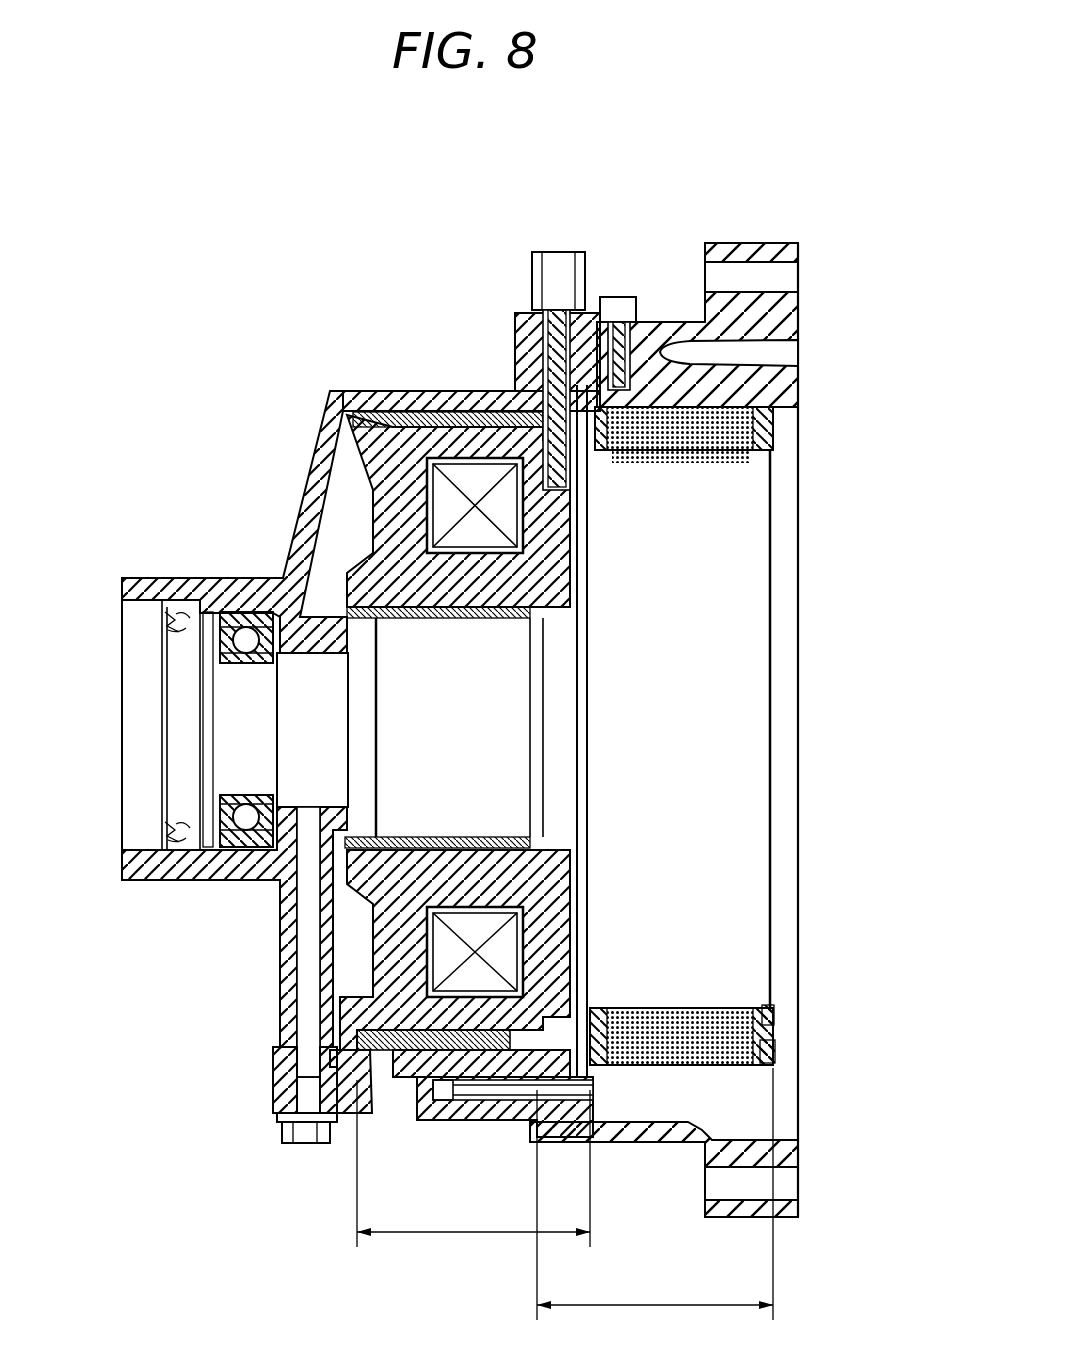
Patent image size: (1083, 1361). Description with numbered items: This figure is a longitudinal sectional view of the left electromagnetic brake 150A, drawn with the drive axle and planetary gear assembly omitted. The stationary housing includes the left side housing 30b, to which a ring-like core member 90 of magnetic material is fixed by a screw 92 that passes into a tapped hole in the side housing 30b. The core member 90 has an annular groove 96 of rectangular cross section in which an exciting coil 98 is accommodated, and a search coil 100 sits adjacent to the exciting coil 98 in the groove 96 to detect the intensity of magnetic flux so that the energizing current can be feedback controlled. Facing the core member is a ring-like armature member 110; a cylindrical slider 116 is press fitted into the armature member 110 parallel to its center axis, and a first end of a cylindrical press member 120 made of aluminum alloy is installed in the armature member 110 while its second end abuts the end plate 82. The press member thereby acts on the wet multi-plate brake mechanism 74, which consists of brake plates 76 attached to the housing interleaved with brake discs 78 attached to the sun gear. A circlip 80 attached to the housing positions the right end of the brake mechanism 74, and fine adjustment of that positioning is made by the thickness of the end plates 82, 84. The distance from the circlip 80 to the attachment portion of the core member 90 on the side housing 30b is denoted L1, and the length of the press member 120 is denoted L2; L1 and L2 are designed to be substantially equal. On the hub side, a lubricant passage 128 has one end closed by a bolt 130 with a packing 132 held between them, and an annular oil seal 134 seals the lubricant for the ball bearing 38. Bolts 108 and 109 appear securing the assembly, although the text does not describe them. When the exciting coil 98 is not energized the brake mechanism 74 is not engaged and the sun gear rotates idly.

The left electromagnetic brake 150A is at (250, 520).
The left side housing 30b is at (386, 391).
The ball bearing 38 is at (246, 648).
The wet multi-plate brake mechanism 74 is at (680, 1090).
The brake plates 76 is at (772, 428).
The brake discs 78 is at (668, 452).
The circlip 80 is at (776, 1046).
The end plate 82 is at (592, 1080).
The end plate 84 is at (774, 1012).
The ring-like core member 90 is at (482, 1098).
The screw 92 is at (598, 1100).
The annular groove 96 is at (505, 985).
The exciting coil 98 is at (468, 477).
The search coil 100 is at (560, 947).
The bolt 108 is at (558, 250).
The bolt 109 is at (617, 298).
The armature member 110 is at (370, 918).
The cylindrical slider 116 is at (443, 620).
The cylindrical press member 120 is at (397, 1075).
The lubricant passage 128 is at (305, 970).
The bolt 130 is at (305, 1148).
The packing 132 is at (272, 1114).
The annular oil seal 134 is at (163, 837).
The distance from circlip to core member attachment portion L1 is at (655, 1194).
The length of cylindrical press member L2 is at (473, 1163).